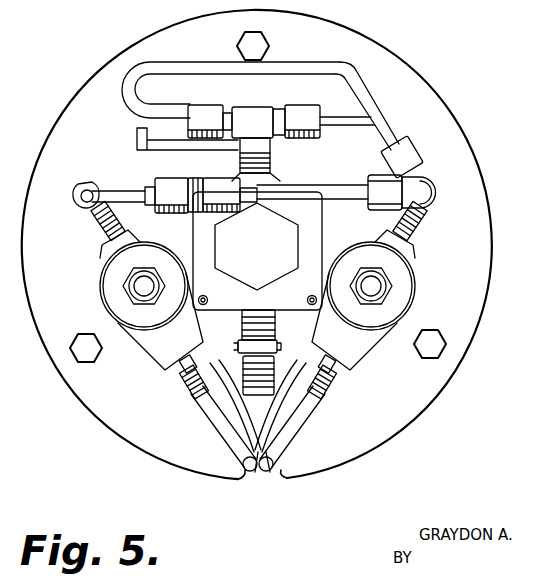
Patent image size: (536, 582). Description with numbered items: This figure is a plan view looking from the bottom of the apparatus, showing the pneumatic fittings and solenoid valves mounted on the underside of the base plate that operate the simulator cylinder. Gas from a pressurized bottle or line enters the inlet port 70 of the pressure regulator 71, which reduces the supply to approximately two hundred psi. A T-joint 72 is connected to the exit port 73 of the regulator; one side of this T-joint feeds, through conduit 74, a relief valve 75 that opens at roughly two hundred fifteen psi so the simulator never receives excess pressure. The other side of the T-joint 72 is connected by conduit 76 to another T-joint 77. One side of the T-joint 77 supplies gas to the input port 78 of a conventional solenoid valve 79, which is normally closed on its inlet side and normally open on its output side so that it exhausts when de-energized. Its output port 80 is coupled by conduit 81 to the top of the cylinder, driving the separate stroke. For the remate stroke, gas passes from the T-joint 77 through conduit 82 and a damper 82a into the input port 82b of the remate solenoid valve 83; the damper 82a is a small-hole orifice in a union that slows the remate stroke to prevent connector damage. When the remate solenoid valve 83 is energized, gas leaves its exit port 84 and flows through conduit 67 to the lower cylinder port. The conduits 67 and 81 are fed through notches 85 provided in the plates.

The conduit 67 is at (248, 477).
The inlet port 70 is at (242, 373).
The pressure regulator 71 is at (294, 238).
The T-joint 72 is at (258, 115).
The exit port 73 is at (238, 155).
The conduit 74 is at (348, 118).
The relief valve 75 is at (168, 107).
The conduit 76 is at (349, 69).
The T-joint 77 is at (438, 187).
The input port 78 is at (426, 222).
The solenoid valve 79 is at (416, 292).
The output port 80 is at (336, 390).
The conduit 81 is at (300, 425).
The conduit 82 is at (336, 186).
The damper 82a is at (198, 177).
The input port 82b is at (92, 218).
The remate solenoid valve 83 is at (135, 335).
The exit port 84 is at (188, 400).
The notches 85 is at (282, 476).